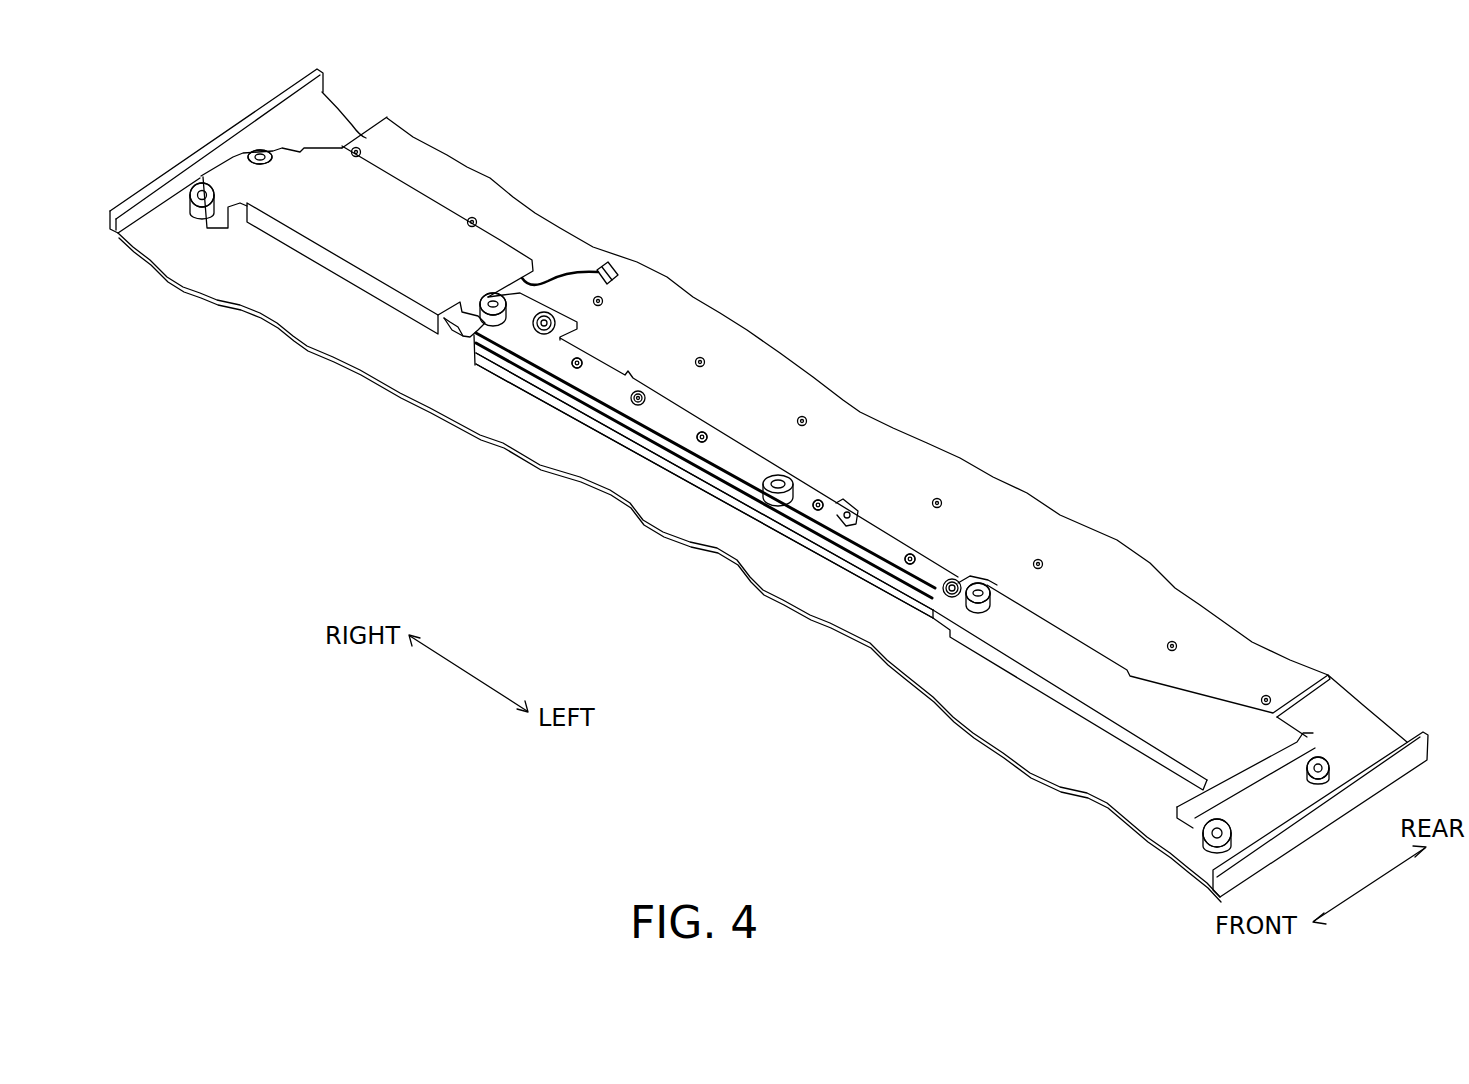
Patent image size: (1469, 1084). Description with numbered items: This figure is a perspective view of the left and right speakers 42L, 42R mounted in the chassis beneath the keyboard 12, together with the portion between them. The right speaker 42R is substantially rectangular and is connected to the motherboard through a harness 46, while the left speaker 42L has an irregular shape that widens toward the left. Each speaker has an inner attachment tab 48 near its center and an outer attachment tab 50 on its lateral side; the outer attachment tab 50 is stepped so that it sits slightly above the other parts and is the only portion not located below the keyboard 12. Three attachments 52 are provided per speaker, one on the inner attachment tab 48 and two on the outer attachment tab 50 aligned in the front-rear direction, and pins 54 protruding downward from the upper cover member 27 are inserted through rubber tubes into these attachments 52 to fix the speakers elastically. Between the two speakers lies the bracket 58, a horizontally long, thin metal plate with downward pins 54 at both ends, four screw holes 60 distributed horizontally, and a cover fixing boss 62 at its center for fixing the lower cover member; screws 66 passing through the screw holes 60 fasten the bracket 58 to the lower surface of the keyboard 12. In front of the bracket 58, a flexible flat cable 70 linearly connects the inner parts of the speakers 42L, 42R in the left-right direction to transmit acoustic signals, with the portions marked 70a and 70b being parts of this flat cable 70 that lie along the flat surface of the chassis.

The keyboard 12 is at (1150, 612).
The upper cover member 27 is at (1120, 787).
The right speaker 42R is at (383, 210).
The left speaker 42L is at (1230, 727).
The harness 46 is at (578, 270).
The inner attachment tab 48 is at (497, 296).
The outer attachment tab 50 is at (233, 172).
The attachments 52 is at (198, 188).
The pins 54 is at (774, 491).
The bracket 58 is at (667, 419).
The screw holes 60 is at (578, 360).
The cover fixing boss 62 is at (782, 490).
The screws 66 is at (788, 413).
The flat cable 70 is at (575, 403).
The holder hook 70a is at (447, 327).
The holder rail portion 70b is at (663, 485).